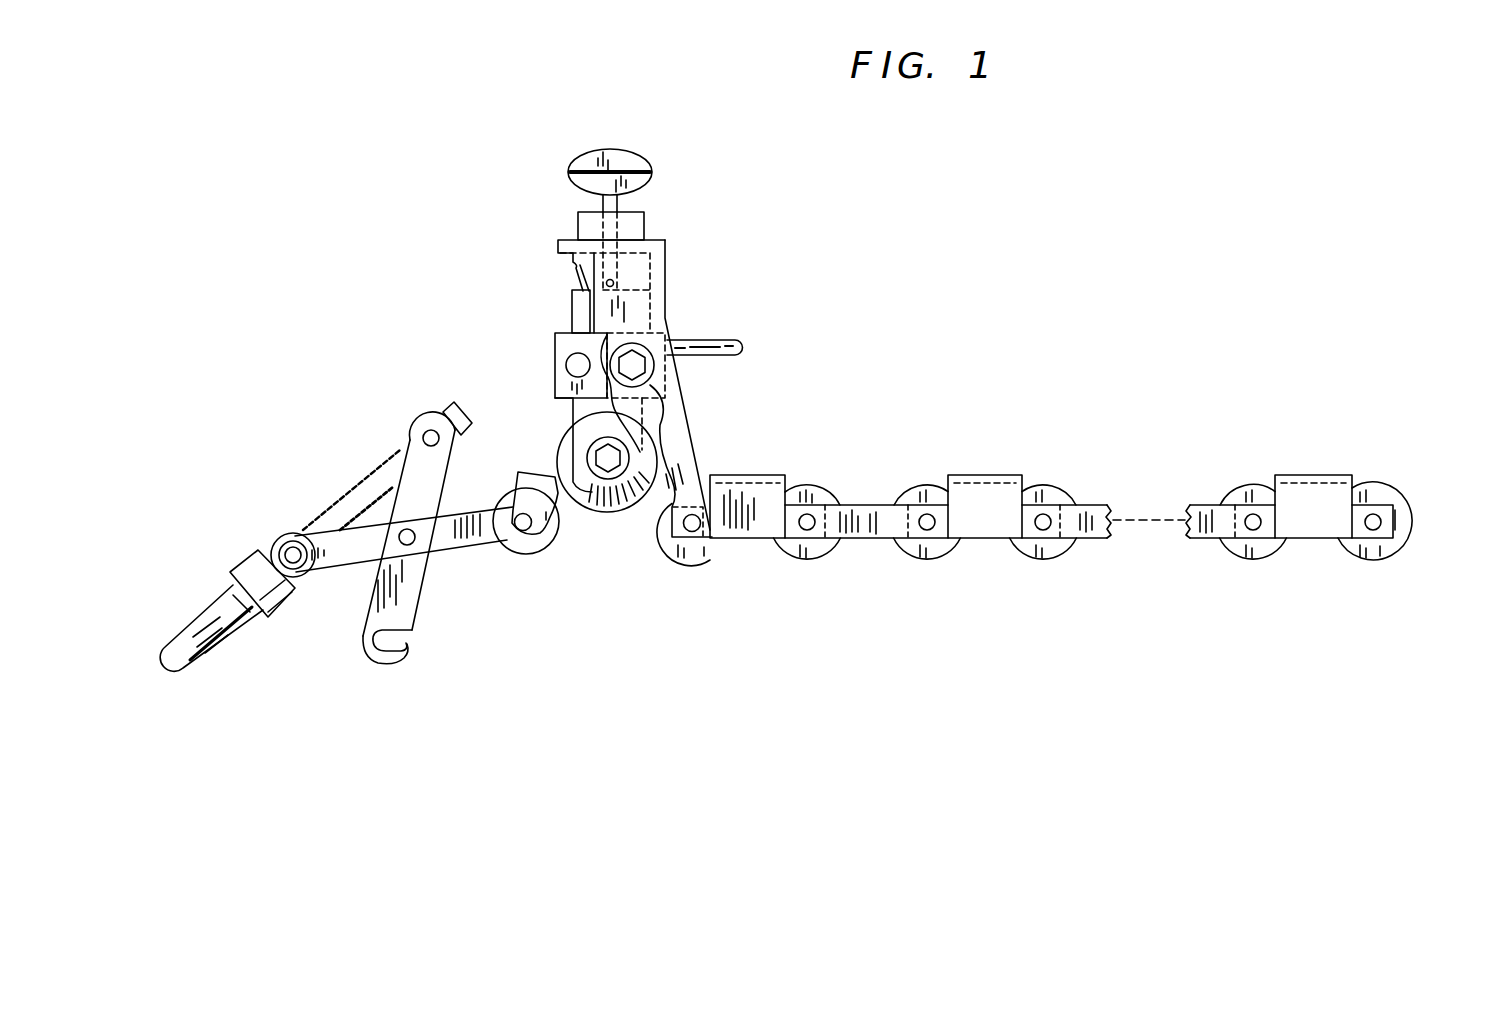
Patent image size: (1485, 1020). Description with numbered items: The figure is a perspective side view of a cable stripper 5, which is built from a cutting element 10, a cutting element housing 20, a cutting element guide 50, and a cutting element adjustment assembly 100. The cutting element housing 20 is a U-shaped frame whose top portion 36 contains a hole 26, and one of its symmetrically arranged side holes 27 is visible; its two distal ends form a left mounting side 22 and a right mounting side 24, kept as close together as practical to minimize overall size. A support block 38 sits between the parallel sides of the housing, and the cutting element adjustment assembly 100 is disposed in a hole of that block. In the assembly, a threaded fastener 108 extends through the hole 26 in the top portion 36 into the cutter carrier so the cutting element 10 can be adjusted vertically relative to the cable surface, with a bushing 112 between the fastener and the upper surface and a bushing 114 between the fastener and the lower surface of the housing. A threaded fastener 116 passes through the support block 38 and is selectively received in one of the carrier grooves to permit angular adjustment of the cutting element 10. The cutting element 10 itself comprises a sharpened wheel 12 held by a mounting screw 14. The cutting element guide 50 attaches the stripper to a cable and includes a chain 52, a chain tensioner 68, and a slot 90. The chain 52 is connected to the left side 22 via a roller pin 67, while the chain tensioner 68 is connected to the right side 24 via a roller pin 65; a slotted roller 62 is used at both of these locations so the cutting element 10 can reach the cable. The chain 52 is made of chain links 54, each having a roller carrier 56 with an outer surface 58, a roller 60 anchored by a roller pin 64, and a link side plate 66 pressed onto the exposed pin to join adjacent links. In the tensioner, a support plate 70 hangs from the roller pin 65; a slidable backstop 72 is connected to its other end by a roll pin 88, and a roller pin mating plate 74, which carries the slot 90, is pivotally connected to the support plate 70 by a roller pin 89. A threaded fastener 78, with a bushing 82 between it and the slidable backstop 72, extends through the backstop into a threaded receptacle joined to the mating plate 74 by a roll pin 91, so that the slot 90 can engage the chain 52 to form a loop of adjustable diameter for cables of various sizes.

The cable stripper 5 is at (1089, 217).
The cutting element 10 is at (556, 434).
The sharpened wheel 12 is at (650, 466).
The mounting screw 14 is at (655, 422).
The cutting element housing 20 is at (685, 324).
The left mounting side 22 is at (686, 482).
The right mounting side 24 is at (558, 520).
The hole 26 is at (646, 212).
The hole 27 is at (614, 283).
The top portion 36 is at (660, 242).
The support block 38 is at (555, 361).
The cutting element guide 50 is at (704, 630).
The chain 52 is at (999, 465).
The chain link 54 is at (1287, 467).
The roller carrier 56 is at (1326, 521).
The outer surface 58 is at (998, 521).
The roller 60 is at (1408, 503).
The slotted roller 62 is at (667, 548).
The roller pin 64 is at (1248, 530).
The roller pin 65 is at (523, 538).
The link side plate 66 is at (867, 540).
The roller pin 67 is at (710, 542).
The chain tensioner 68 is at (373, 457).
The support plate 70 is at (443, 554).
The slidable backstop 72 is at (280, 536).
The roller pin mating plate 74 is at (365, 660).
The threaded fastener 78 is at (345, 490).
The bushing 82 is at (245, 566).
The roll pin 88 is at (300, 569).
The roller pin 89 is at (399, 536).
The slot 90 is at (402, 641).
The roll pin 91 is at (423, 429).
The cutting element adjustment assembly 100 is at (570, 310).
The threaded fastener 108 is at (604, 152).
The bushing 112 is at (578, 222).
The bushing 114 is at (574, 270).
The threaded fastener 116 is at (732, 340).